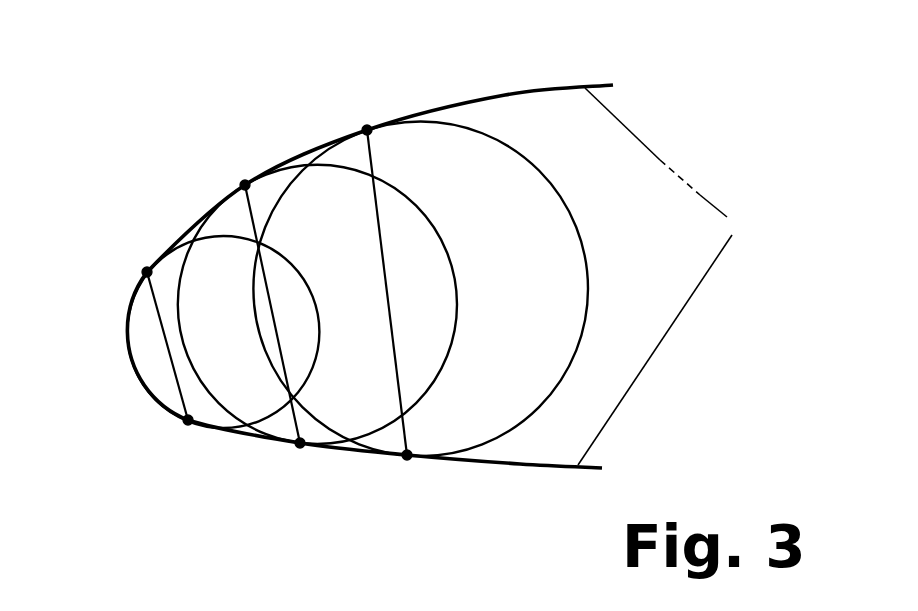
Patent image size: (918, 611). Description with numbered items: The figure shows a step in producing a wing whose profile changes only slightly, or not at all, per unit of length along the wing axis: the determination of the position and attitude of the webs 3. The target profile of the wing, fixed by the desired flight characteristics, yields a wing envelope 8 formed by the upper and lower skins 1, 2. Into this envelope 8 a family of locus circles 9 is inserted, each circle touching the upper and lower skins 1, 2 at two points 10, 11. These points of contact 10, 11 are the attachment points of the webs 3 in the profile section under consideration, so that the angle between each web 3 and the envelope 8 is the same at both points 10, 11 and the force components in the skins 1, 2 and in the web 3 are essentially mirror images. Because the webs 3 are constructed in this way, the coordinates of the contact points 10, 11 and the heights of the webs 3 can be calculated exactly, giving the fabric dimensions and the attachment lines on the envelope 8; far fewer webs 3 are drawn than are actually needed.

The upper skin 1 is at (505, 95).
The lower skin 2 is at (520, 466).
The web 3 is at (170, 350).
The wing envelope 8 is at (660, 276).
The locus circle 9 is at (284, 362).
The contact point on upper skin 10 is at (147, 272).
The contact point on lower skin 11 is at (185, 427).